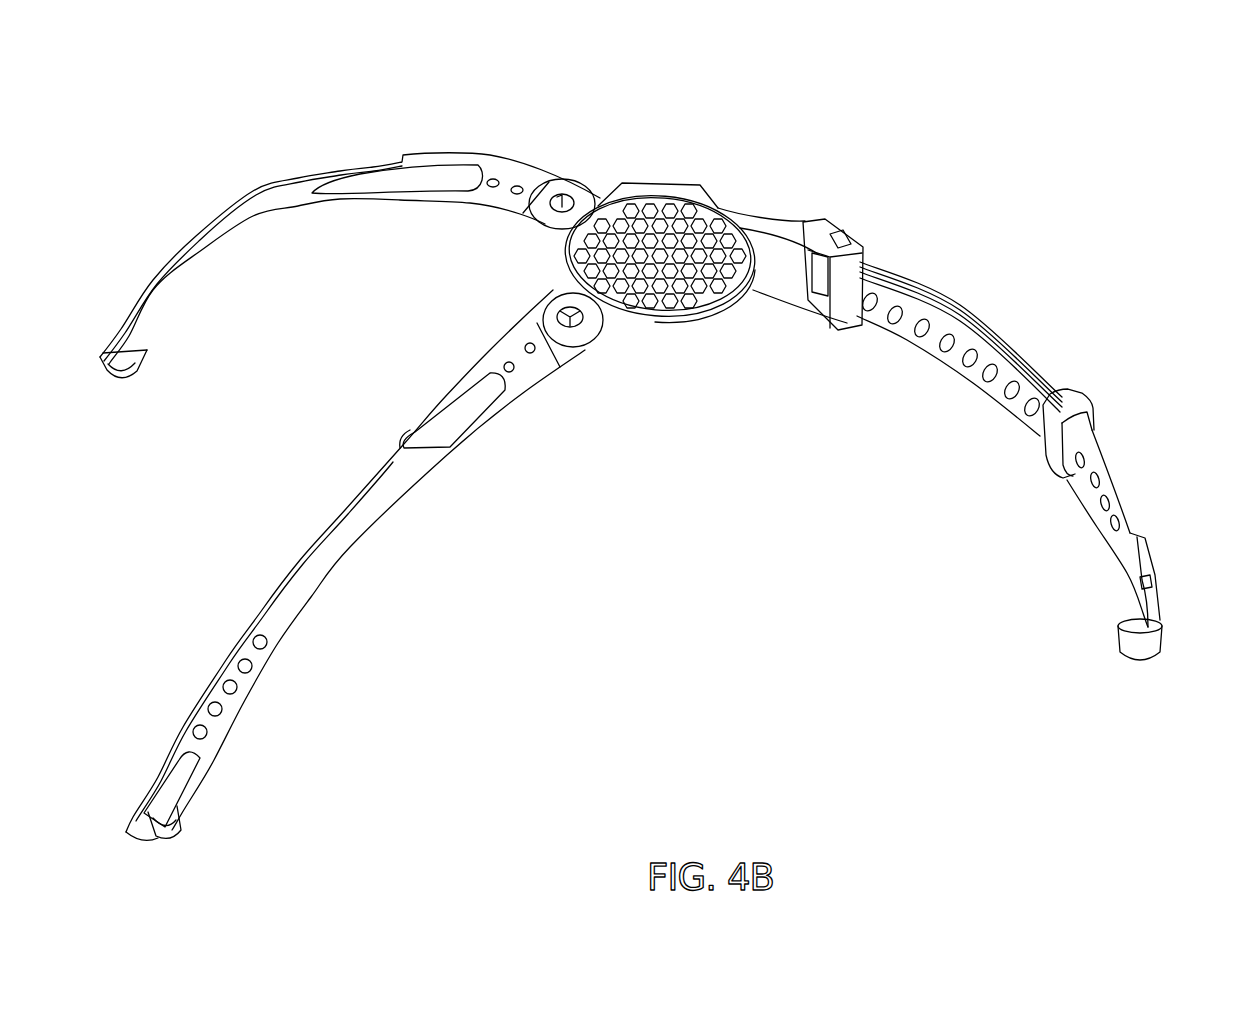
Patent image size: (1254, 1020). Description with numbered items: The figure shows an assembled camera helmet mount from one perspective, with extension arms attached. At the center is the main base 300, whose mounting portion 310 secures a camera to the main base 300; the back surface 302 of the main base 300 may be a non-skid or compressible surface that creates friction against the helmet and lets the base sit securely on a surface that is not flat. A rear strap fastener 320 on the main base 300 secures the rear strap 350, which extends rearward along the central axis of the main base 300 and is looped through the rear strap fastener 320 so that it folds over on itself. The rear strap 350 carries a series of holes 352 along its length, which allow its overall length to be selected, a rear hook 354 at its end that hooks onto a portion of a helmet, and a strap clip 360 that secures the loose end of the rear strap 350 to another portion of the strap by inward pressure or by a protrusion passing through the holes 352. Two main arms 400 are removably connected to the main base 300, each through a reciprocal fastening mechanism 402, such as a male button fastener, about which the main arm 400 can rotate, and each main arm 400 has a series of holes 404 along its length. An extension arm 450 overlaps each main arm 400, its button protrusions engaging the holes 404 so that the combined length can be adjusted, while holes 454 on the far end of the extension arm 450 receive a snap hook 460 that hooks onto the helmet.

The main base 300 is at (747, 186).
The back surface 302 is at (697, 293).
The mounting portion 310 is at (660, 183).
The rear strap fastener 320 is at (837, 224).
The rear strap 350 is at (980, 300).
The holes 352 is at (890, 318).
The rear hook 354 is at (1154, 665).
The strap clip 360 is at (1092, 405).
The main arm 400 is at (495, 150).
The reciprocal fastening mechanism 402 is at (560, 192).
The holes 404 is at (511, 178).
The extension arm 450 is at (255, 185).
The holes 454 is at (243, 692).
The snap hook 460 is at (150, 345).